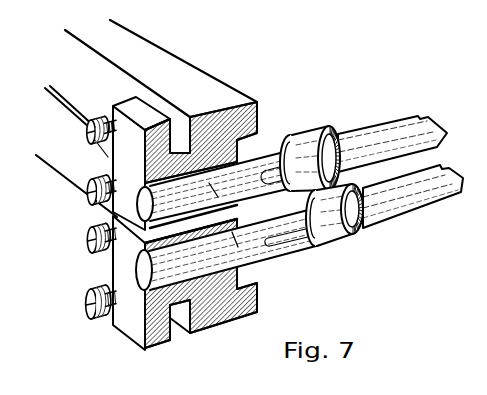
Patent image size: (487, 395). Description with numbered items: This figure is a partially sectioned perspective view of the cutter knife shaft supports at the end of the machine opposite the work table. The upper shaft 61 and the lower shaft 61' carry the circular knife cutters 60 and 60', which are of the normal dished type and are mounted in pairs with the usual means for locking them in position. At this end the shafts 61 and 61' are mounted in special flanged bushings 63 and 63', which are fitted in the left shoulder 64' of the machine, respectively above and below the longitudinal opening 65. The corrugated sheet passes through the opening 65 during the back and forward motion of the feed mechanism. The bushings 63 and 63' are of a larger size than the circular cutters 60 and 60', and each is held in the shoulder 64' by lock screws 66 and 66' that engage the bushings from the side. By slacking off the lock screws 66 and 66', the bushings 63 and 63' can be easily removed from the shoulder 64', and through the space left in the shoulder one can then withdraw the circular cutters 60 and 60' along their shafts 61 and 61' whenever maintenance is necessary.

The circular knife cutter 60 is at (310, 124).
The circular knife cutter 60' is at (334, 240).
The upper shaft 61 is at (292, 139).
The lower shaft 61' is at (299, 231).
The flanged bushing 63 is at (195, 154).
The flanged bushing 63' is at (207, 283).
The shoulder 64' is at (174, 68).
The longitudinal opening 65 is at (76, 88).
The lock screw 66 is at (80, 177).
The lock screw 66' is at (79, 271).